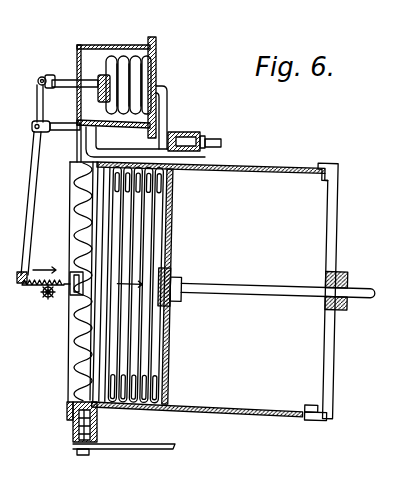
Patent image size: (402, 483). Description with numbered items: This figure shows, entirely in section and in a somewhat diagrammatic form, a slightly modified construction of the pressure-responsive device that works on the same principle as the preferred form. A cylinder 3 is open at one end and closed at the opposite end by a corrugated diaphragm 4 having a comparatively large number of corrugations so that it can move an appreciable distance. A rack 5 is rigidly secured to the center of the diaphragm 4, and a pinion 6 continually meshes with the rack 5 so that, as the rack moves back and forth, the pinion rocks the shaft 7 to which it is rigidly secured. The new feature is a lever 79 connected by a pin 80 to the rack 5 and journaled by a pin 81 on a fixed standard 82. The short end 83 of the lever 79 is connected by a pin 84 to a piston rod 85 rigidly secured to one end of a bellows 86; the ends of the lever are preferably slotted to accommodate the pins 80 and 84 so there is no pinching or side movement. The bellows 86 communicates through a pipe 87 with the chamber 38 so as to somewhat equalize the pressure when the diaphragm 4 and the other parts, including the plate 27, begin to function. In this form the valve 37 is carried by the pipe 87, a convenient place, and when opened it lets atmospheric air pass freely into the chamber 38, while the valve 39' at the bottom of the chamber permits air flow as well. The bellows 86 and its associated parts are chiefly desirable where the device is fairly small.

The cylinder 3 is at (298, 409).
The diaphragm 4 is at (69, 368).
The rack 5 is at (64, 279).
The pinion 6 is at (52, 298).
The shaft 7 is at (43, 294).
The plate 27 is at (174, 358).
The valve 37 is at (205, 130).
The chamber 38 is at (96, 217).
The valve 39' is at (102, 428).
The lever 79 is at (31, 198).
The pin 80 is at (21, 283).
The pin 81 is at (33, 128).
The fixed standard 82 is at (66, 131).
The short end of lever 83 is at (37, 105).
The pin 84 is at (39, 79).
The piston rod 85 is at (67, 80).
The bellows 86 is at (122, 56).
The pipe 87 is at (168, 105).